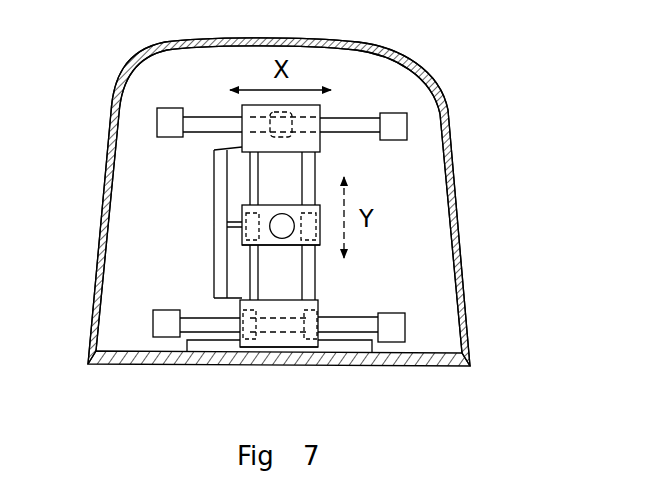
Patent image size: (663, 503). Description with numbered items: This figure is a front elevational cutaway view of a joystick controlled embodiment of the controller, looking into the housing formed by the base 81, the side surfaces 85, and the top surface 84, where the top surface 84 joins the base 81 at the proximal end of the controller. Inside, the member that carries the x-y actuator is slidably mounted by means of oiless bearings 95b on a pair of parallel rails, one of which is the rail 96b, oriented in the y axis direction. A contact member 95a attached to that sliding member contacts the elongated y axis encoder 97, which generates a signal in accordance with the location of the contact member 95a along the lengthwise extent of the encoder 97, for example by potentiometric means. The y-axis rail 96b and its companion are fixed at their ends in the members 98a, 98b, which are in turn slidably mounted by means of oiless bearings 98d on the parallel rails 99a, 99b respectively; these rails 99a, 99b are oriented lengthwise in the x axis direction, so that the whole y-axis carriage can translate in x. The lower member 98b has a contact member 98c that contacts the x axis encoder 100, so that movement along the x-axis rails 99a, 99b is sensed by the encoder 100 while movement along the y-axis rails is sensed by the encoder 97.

The base 81 is at (415, 368).
The top surface 84 is at (358, 42).
The side surfaces 85 is at (100, 230).
The contact member 95a is at (237, 222).
The oiless bearings 95b is at (258, 242).
The parallel rail 96b is at (315, 187).
The y axis encoder 97 is at (207, 237).
The member 98a is at (332, 107).
The member 98b is at (320, 305).
The contact member 98c is at (280, 348).
The oiless bearings 98d is at (262, 117).
The parallel rail 99a is at (370, 112).
The parallel rail 99b is at (205, 316).
The x axis encoder 100 is at (208, 350).